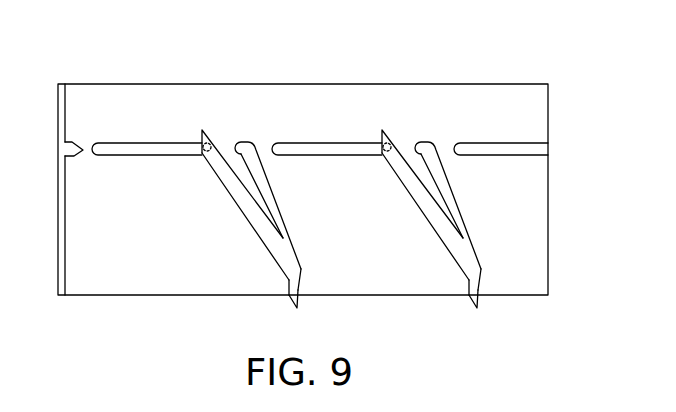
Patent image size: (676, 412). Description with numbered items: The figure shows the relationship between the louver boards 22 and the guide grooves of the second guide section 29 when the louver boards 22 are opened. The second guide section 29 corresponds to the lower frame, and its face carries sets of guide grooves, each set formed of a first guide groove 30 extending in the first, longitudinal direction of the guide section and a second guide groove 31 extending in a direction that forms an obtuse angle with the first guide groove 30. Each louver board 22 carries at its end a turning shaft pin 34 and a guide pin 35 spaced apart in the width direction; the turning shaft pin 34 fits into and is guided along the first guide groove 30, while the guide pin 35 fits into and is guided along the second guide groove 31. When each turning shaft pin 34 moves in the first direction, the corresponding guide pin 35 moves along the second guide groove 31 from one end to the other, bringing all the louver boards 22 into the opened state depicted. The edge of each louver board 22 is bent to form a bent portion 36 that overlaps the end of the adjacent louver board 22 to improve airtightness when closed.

The louver board 22 is at (248, 214).
The second guide section 29 is at (549, 199).
The first guide groove 30 is at (160, 147).
The second guide groove 31 is at (253, 163).
The turning shaft pin 34 is at (208, 144).
The guide pin 35 is at (278, 262).
The bent portion 36 is at (300, 288).